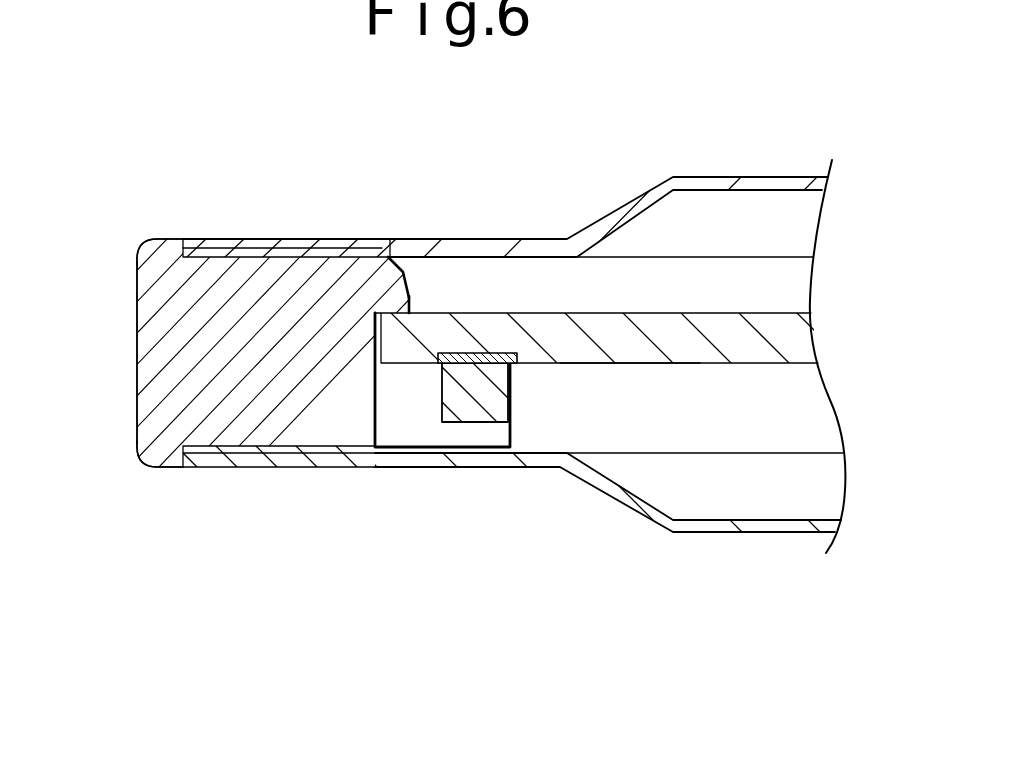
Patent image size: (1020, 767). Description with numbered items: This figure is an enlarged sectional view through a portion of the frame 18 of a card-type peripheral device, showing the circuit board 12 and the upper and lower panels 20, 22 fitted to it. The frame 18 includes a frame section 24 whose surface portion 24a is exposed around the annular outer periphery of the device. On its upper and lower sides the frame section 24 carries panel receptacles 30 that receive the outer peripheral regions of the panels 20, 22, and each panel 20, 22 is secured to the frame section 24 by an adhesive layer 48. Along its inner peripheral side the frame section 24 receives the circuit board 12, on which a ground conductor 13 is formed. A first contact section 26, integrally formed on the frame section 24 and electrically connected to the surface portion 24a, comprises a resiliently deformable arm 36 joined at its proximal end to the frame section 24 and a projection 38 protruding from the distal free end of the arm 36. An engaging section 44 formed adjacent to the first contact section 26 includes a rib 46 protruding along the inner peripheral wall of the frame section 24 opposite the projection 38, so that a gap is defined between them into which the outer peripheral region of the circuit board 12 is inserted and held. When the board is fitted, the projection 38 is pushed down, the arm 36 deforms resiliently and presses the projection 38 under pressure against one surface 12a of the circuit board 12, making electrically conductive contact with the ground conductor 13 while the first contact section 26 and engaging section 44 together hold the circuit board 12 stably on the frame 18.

The circuit board 12 is at (706, 376).
The surface of the circuit board 12a is at (635, 364).
The ground conductor 13 is at (523, 370).
The frame 18 is at (126, 378).
The upper panel 20 is at (724, 170).
The lower panel 22 is at (768, 542).
The frame section 24 is at (160, 238).
The surface portion 24a is at (136, 310).
The first contact section 26 is at (527, 422).
The panel receptacle 30 is at (253, 257).
The arm 36 is at (478, 408).
The projection 38 is at (465, 362).
The engaging section 44 is at (405, 266).
The rib 46 is at (412, 300).
The adhesive layer 48 is at (317, 257).